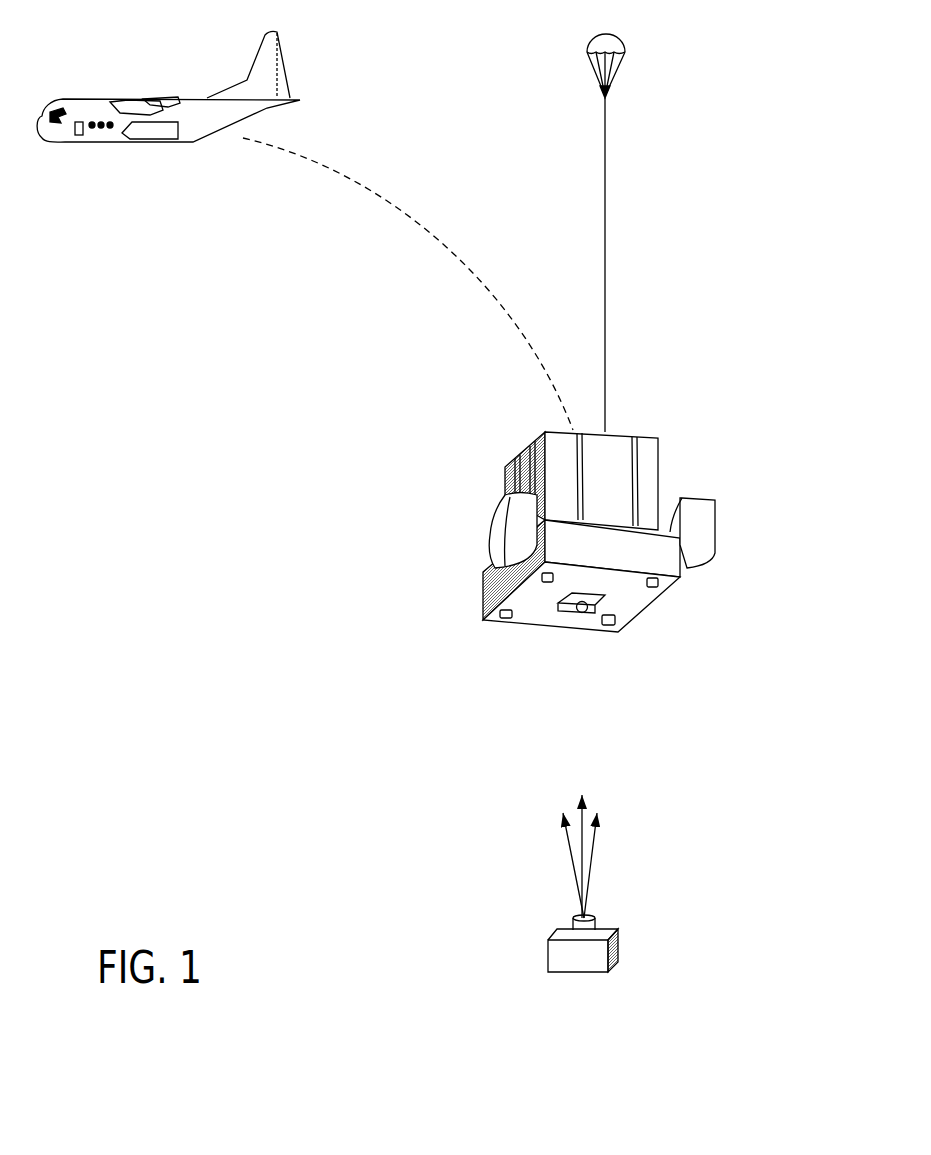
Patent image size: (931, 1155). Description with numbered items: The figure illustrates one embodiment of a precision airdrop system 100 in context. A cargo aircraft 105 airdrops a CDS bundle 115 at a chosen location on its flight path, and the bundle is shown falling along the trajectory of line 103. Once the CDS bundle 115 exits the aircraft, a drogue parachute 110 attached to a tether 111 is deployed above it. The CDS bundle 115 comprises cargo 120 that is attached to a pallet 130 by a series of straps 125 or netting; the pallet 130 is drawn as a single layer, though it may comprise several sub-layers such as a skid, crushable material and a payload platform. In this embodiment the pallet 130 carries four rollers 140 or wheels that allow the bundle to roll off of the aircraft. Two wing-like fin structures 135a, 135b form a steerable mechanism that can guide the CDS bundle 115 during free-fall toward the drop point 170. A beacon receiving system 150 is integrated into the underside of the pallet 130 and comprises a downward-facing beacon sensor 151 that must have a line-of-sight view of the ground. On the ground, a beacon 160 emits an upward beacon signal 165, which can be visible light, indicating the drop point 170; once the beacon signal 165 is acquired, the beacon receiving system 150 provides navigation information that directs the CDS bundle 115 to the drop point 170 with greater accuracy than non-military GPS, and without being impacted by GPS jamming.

The aerial delivery system 100 is at (762, 182).
The trajectory line 103 is at (420, 215).
The cargo aircraft 105 is at (132, 100).
The drogue parachute 110 is at (590, 66).
The tether 111 is at (603, 228).
The CDS bundle 115 is at (488, 438).
The cargo 120 is at (612, 458).
The straps 125 is at (635, 447).
The pallet 130 is at (483, 585).
The wing-like fin structure 135a is at (497, 545).
The wing-like fin structure 135b is at (717, 553).
The rollers 140 is at (653, 590).
The beacon receiving system 150 is at (551, 650).
The beacon sensor 151 is at (580, 612).
The beacon 160 is at (552, 953).
The beacon signal 165 is at (567, 857).
The drop point 170 is at (685, 903).